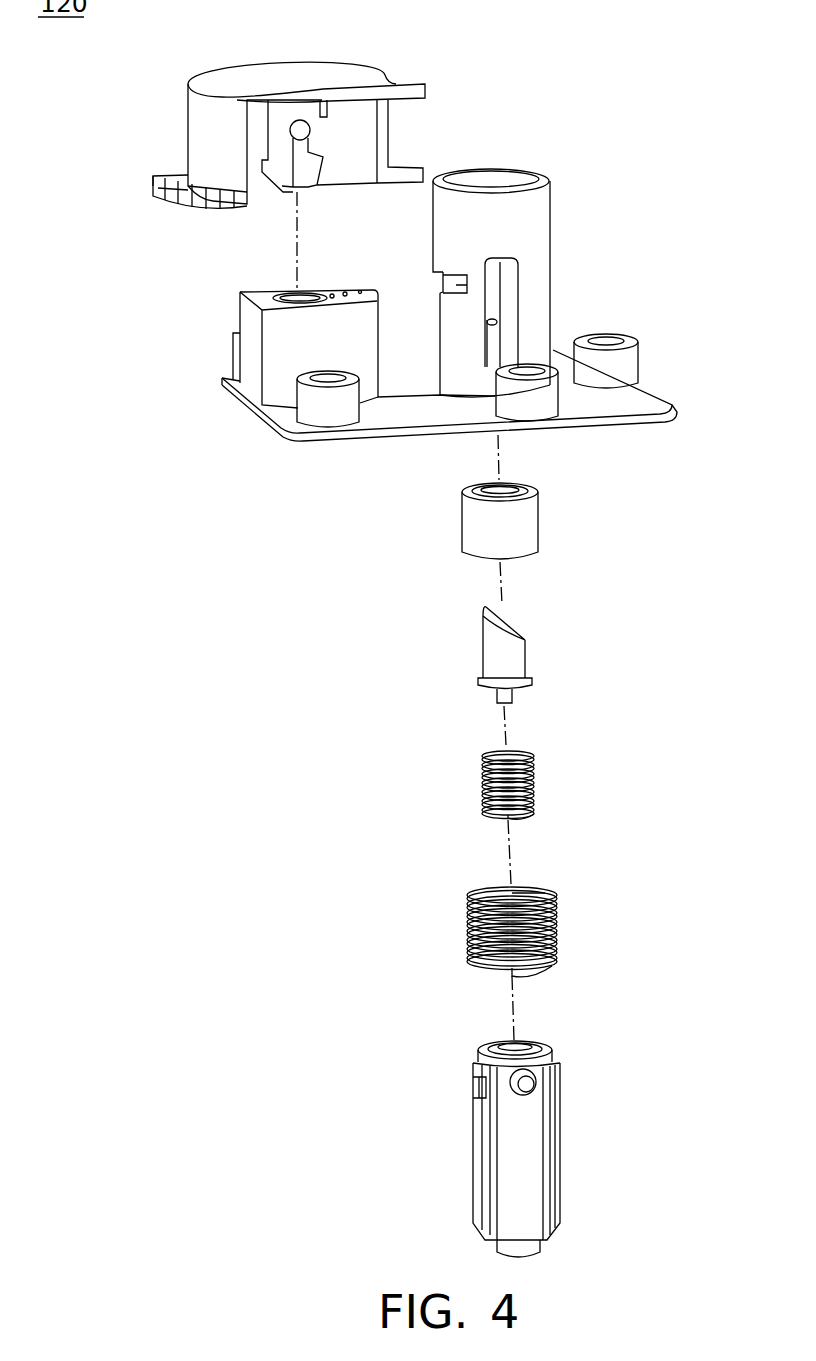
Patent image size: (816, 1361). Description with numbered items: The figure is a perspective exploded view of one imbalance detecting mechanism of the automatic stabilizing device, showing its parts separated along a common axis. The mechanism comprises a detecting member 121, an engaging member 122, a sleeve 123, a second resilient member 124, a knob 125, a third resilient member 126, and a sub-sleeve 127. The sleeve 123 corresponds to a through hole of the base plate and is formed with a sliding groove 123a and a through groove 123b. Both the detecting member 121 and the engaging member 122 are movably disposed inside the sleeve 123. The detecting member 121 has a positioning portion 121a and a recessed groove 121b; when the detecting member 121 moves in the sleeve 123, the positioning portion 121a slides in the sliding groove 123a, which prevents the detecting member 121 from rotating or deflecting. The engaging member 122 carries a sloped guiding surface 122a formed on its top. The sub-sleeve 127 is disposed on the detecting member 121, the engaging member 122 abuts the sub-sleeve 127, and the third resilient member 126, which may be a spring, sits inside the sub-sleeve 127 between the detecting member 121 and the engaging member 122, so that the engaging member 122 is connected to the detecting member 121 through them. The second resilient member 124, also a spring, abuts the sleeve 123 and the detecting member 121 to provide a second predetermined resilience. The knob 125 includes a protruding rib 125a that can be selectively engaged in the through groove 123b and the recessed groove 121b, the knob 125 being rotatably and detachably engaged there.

The detecting member 121 is at (536, 1152).
The positioning portion 121a is at (530, 1083).
The recessed groove 121b is at (473, 1088).
The engaging member 122 is at (488, 647).
The sloped guiding surface 122a is at (510, 630).
The sleeve 123 is at (562, 220).
The sliding groove 123a is at (550, 297).
The through groove 123b is at (447, 282).
The second resilient member 124 is at (557, 916).
The knob 125 is at (247, 65).
The protruding rib 125a is at (398, 80).
The third resilient member 126 is at (535, 777).
The sub-sleeve 127 is at (525, 520).